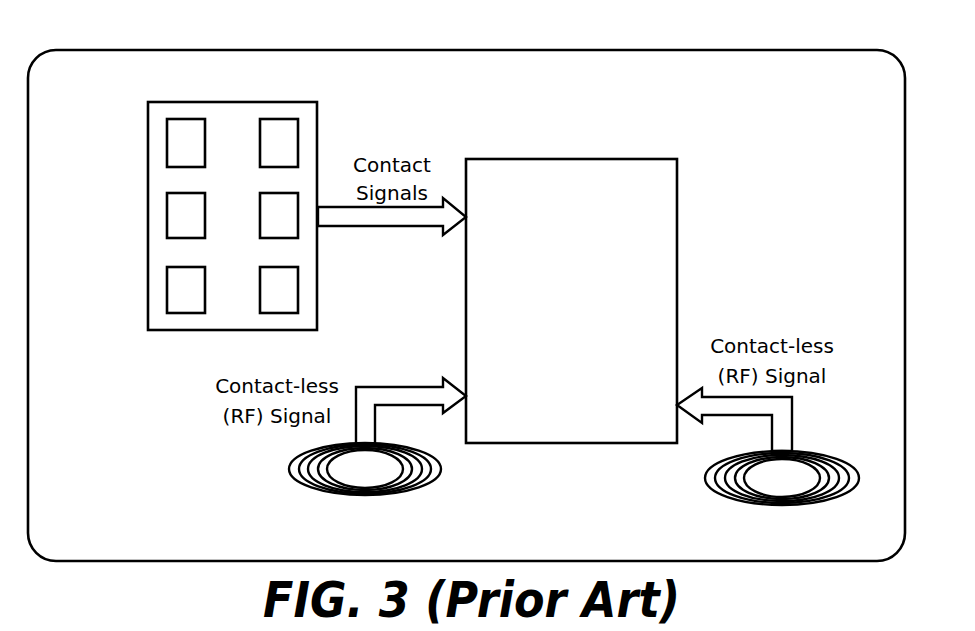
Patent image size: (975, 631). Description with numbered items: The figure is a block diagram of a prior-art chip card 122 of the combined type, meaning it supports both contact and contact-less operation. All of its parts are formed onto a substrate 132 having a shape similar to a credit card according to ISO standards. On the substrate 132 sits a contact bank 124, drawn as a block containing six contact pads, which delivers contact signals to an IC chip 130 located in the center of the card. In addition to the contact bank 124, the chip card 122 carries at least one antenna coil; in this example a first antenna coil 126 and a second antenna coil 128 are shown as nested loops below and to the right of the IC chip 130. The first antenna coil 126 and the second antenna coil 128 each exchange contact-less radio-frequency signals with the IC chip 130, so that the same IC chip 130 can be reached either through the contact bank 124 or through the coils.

The chip card 122 is at (96, 8).
The contact bank 124 is at (323, 117).
The first antenna coil 126 is at (362, 499).
The second antenna coil 128 is at (783, 509).
The IC chip 130 is at (561, 157).
The substrate 132 is at (513, 48).